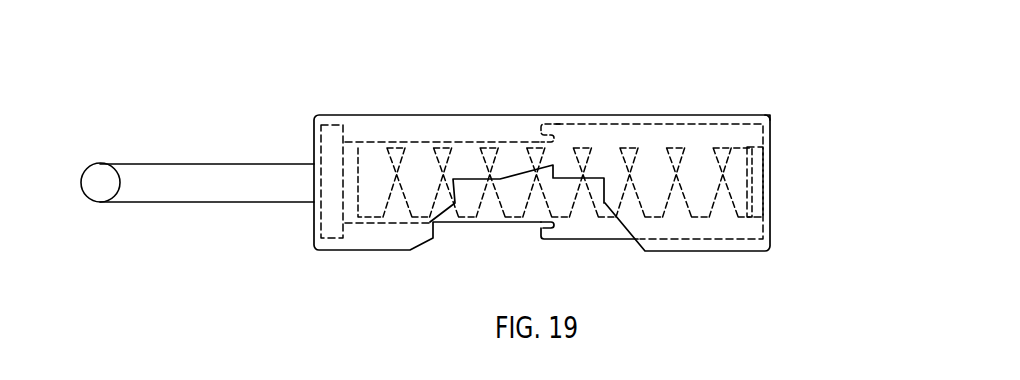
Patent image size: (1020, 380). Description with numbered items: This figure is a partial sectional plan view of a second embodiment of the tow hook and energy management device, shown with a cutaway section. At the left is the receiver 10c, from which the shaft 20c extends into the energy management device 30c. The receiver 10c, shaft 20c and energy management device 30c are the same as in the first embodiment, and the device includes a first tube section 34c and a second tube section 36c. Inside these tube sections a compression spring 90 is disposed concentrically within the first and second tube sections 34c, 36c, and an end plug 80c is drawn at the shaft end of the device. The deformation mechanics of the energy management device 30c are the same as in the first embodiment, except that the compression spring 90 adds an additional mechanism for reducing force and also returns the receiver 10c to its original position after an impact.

The receiver 10c is at (86, 199).
The shaft 20c is at (142, 204).
The energy management device 30c is at (713, 256).
The first tube section 34c is at (595, 242).
The second tube section 36c is at (455, 225).
The end plug 80c is at (350, 127).
The compression spring 90 is at (584, 143).